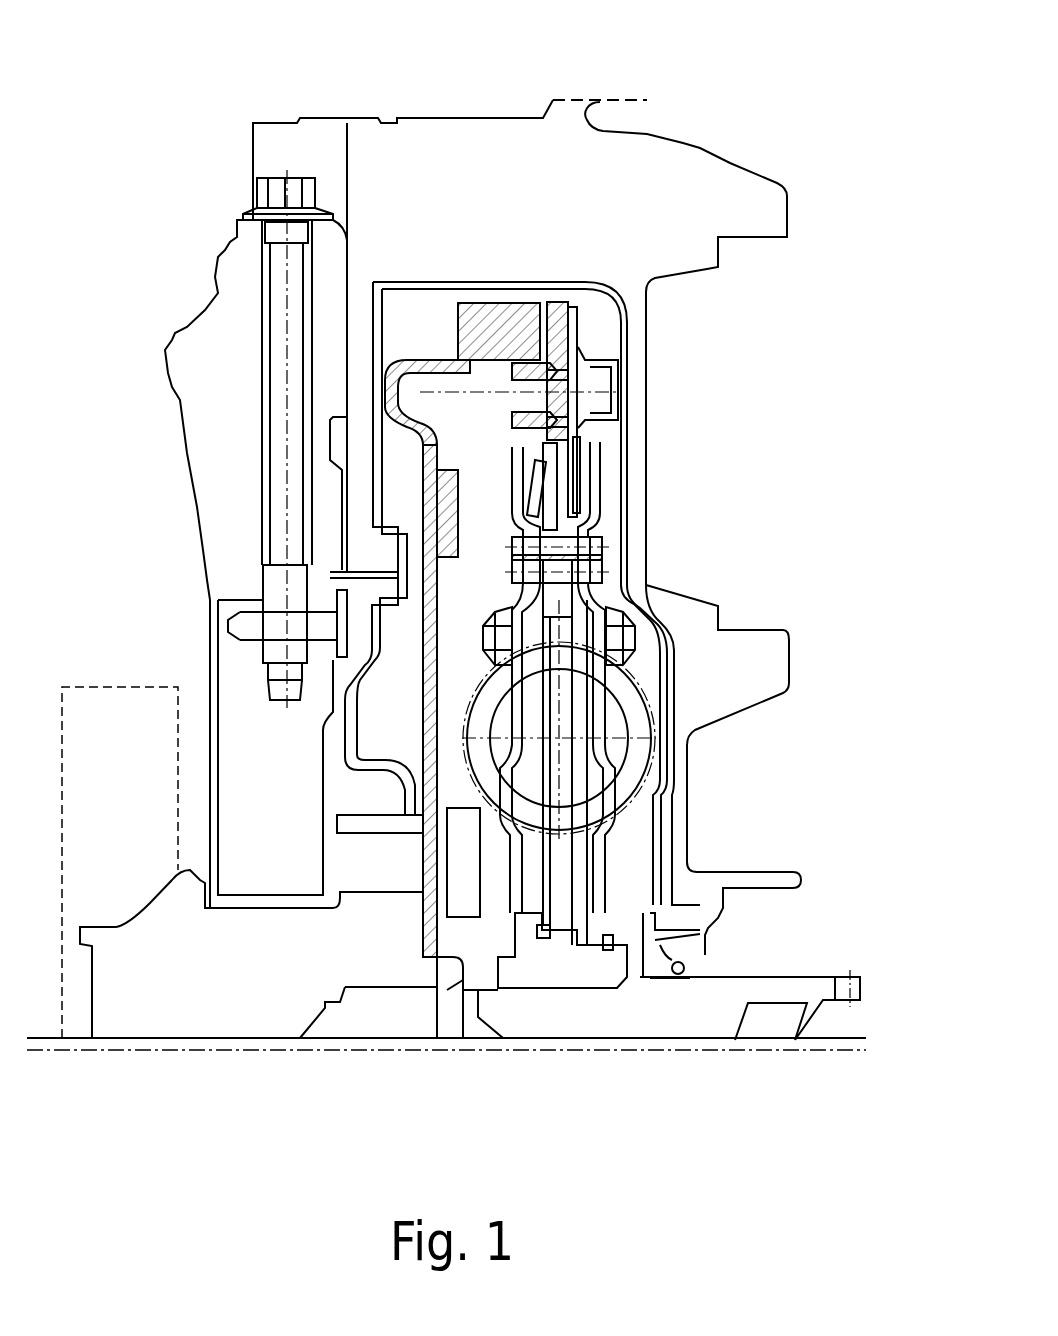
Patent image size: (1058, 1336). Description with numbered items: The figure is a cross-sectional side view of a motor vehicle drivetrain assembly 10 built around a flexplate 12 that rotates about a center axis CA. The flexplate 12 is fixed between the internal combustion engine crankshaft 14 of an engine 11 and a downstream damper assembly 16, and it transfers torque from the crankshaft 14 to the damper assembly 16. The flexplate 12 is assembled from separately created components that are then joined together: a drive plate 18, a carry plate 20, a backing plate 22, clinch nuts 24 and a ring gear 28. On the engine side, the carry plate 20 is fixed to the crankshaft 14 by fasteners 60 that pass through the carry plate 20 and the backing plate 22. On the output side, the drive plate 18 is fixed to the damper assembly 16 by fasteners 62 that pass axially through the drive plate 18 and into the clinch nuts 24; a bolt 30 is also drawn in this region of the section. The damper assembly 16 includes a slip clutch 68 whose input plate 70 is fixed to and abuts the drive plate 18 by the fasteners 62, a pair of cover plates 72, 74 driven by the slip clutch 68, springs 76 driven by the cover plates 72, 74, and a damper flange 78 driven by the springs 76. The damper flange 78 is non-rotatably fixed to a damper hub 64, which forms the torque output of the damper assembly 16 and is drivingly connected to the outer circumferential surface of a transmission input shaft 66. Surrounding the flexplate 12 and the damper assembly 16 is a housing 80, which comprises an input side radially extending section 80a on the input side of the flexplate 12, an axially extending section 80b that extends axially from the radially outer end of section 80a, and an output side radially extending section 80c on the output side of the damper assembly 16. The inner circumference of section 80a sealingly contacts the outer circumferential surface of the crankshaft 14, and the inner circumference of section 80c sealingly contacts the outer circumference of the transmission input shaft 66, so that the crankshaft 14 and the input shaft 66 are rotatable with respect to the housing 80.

The motor vehicle drivetrain assembly 10 is at (163, 146).
The engine 11 is at (120, 687).
The flexplate 12 is at (582, 298).
The internal combustion engine crankshaft 14 is at (148, 927).
The damper assembly 16 is at (606, 467).
The drive plate 18 is at (560, 298).
The carry plate 20 is at (423, 355).
The backing plate 22 is at (449, 935).
The clinch nuts 24 is at (503, 418).
The ring gear 28 is at (495, 298).
The bolt 30 is at (313, 439).
The fasteners 60 is at (384, 902).
The fasteners 62 is at (594, 354).
The damper hub 64 is at (553, 970).
The transmission input shaft 66 is at (668, 1013).
The slip clutch 68 is at (591, 438).
The input plate 70 is at (575, 325).
The cover plate 72 is at (517, 457).
The cover plate 74 is at (590, 502).
The springs 76 is at (637, 703).
The damper flange 78 is at (557, 855).
The housing 80 is at (417, 478).
The input side radially extending section 80a is at (202, 403).
The axially extending section 80b is at (470, 140).
The output side radially extending section 80c is at (640, 553).
The center axis CA is at (250, 1053).